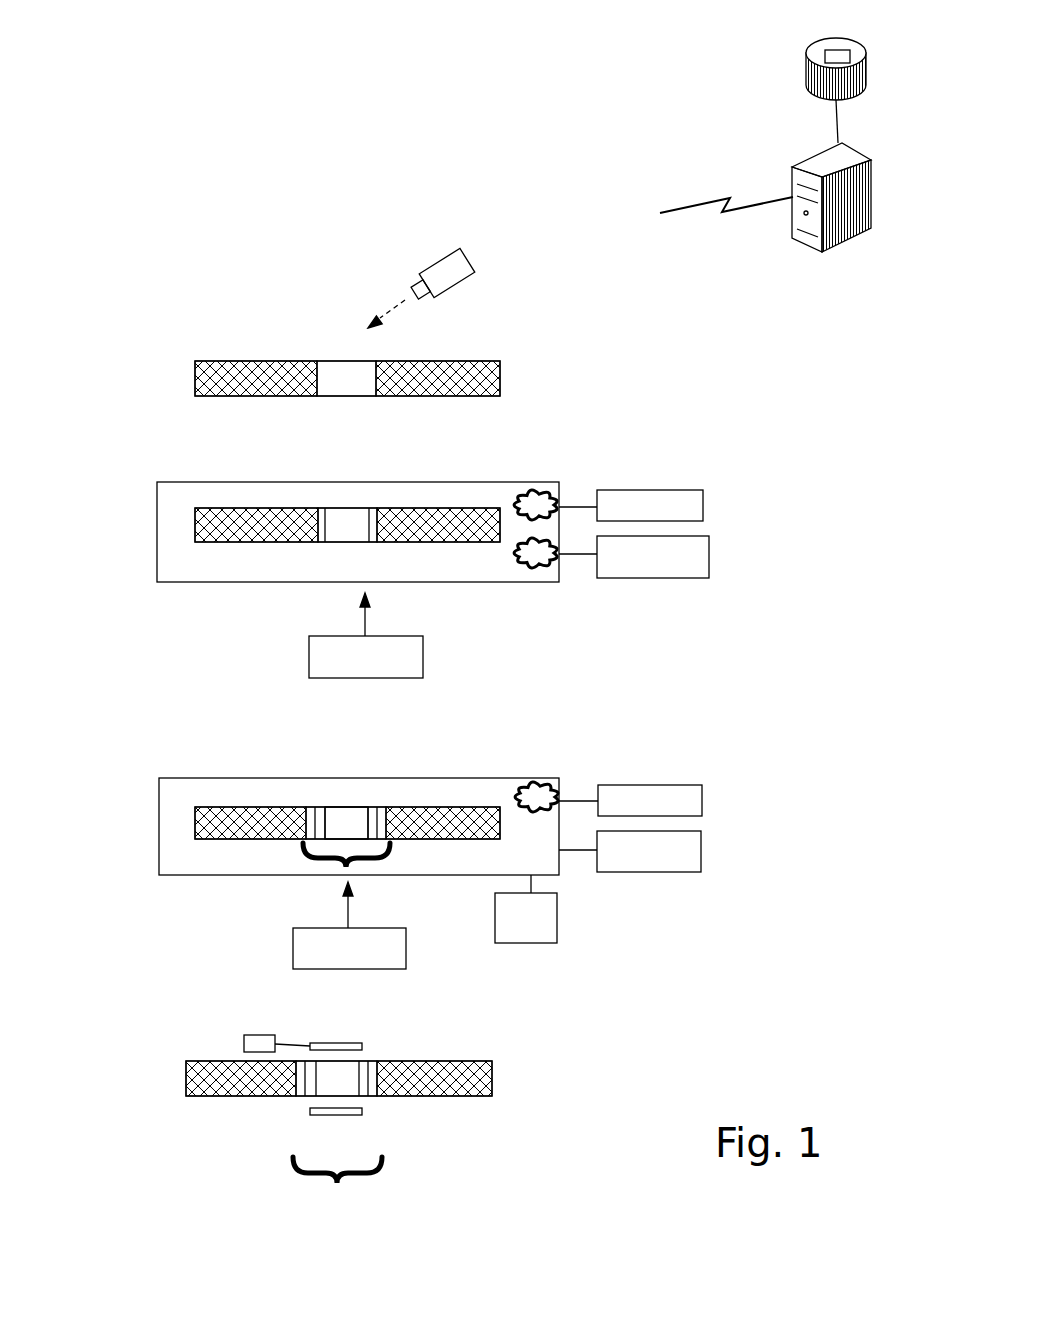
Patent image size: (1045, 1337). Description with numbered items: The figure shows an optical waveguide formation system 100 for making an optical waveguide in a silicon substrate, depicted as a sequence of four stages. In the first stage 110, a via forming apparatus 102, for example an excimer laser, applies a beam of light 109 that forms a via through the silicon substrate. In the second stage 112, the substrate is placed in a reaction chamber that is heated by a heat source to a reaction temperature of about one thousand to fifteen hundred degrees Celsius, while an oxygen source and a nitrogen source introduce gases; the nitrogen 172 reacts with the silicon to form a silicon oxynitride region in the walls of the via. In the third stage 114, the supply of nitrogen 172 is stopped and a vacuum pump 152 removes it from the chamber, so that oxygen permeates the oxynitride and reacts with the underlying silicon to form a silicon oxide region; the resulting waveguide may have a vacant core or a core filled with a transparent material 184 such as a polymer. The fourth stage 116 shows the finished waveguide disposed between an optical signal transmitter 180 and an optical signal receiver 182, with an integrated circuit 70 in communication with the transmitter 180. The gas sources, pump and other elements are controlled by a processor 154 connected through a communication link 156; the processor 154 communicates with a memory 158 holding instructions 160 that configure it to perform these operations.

The optical waveguide formation system 100 is at (425, 101).
The integrated circuit 70 is at (258, 1037).
The via forming apparatus 102 is at (457, 293).
The beam of light 109 is at (383, 298).
The via forming stage 110 is at (190, 357).
The oxynitride forming stage 112 is at (152, 471).
The oxide forming stage 114 is at (182, 770).
The optical communication system stage 116 is at (178, 1048).
The vacuum pump 152 is at (558, 923).
The processor 154 is at (805, 252).
The communication link 156 is at (722, 215).
The memory 158 is at (815, 63).
The instructions 160 is at (825, 50).
The nitrogen gas 172 is at (522, 565).
The optical signal transmitter 180 is at (347, 1043).
The optical signal receiver 182 is at (333, 1115).
The transparent material 184 is at (361, 789).